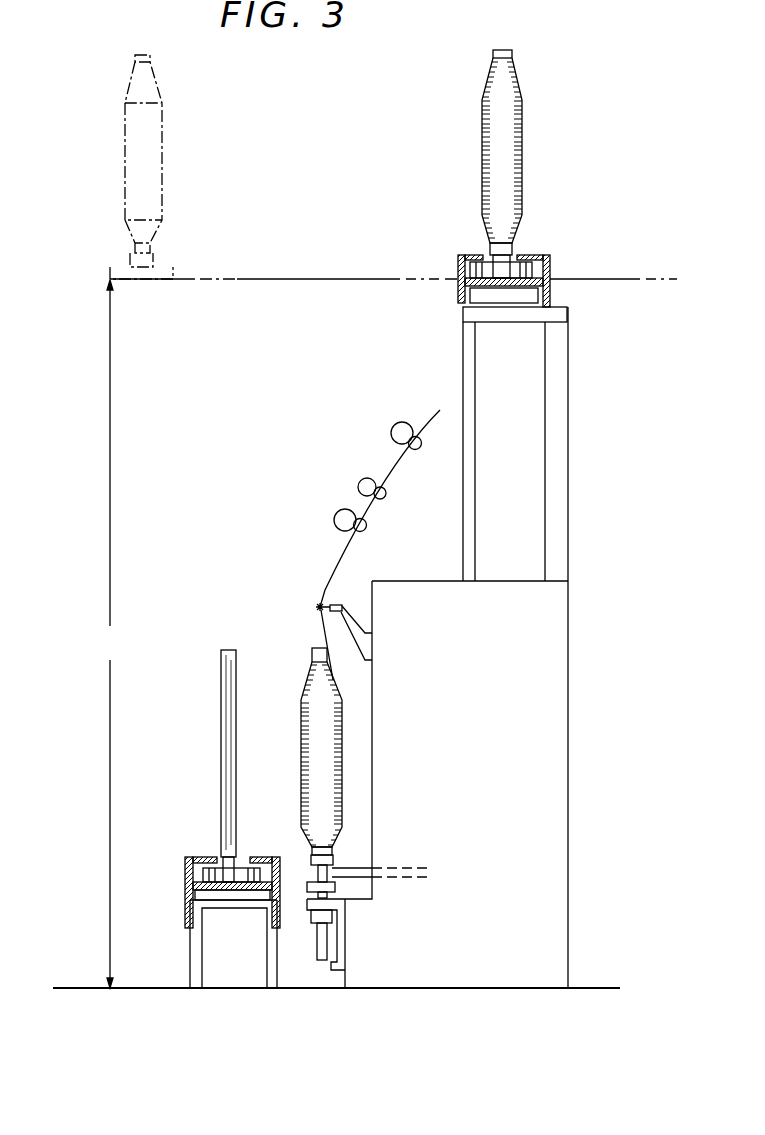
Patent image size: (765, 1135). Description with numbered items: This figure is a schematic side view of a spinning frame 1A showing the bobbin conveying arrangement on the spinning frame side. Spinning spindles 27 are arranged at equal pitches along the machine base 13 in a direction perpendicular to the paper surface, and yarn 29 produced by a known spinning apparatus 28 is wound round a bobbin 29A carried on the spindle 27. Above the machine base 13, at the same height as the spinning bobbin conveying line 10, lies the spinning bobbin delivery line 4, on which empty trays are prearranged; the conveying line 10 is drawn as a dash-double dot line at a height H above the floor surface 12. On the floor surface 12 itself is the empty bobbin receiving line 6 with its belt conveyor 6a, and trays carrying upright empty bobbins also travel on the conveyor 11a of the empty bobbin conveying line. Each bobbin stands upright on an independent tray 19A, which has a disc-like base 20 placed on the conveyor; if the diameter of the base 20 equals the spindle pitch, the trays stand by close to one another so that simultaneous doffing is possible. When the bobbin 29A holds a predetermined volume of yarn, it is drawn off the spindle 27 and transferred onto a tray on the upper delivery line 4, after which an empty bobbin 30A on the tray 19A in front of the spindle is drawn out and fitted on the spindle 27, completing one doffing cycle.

The spinning frame 1A is at (572, 637).
The spinning bobbin delivery line 4 is at (521, 269).
The empty bobbin receiving line 6 is at (206, 882).
The belt conveyor 6a is at (193, 857).
The spinning bobbin conveying line 10 is at (280, 279).
The conveyor 11a is at (552, 278).
The floor surface 12 is at (90, 988).
The machine base 13 is at (556, 832).
The tray 19A is at (503, 260).
The disc-like base 20 is at (464, 257).
The spinning spindle 27 is at (333, 865).
The spinning apparatus 28 is at (325, 513).
The yarn 29 is at (333, 672).
The bobbin 29A is at (503, 137).
The empty bobbin 30A is at (223, 698).
The height H is at (110, 634).